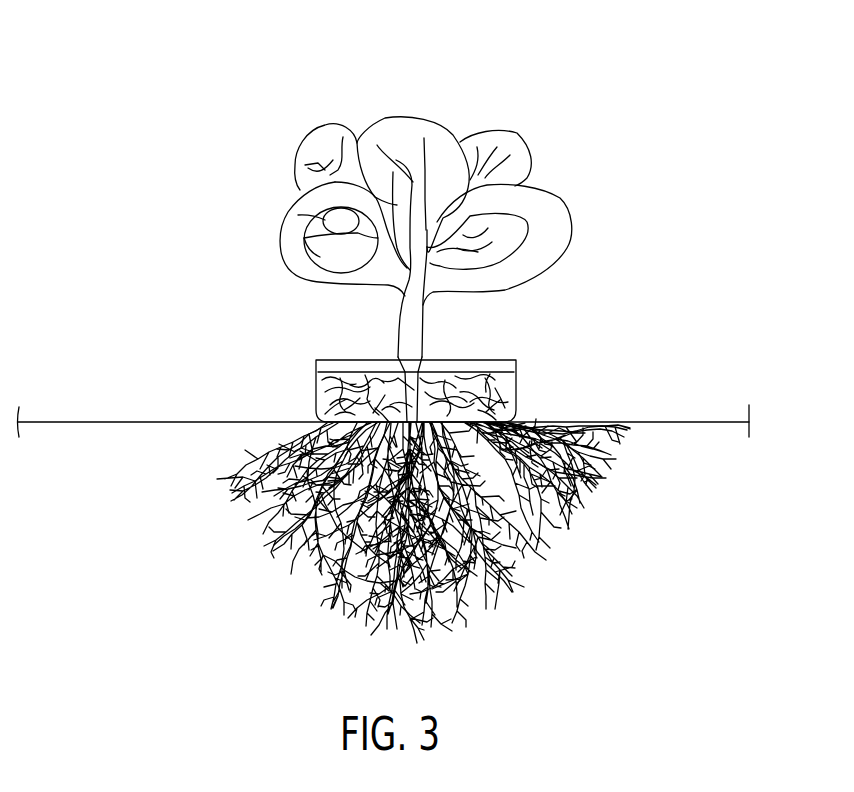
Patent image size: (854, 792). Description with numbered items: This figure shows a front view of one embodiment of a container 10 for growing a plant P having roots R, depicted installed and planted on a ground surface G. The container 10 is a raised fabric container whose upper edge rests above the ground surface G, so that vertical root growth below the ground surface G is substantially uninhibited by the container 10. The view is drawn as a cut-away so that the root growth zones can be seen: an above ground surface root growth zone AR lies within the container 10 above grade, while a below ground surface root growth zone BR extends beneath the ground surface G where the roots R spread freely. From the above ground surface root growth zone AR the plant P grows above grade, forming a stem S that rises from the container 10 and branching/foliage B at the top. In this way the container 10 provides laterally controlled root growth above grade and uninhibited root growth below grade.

The plant P is at (601, 127).
The branching/foliage B is at (557, 245).
The stem S is at (415, 330).
The container 10 is at (531, 361).
The above ground surface root growth zone AR is at (516, 398).
The ground surface G is at (718, 422).
The below ground surface root growth zone BR is at (613, 485).
The roots R is at (593, 547).